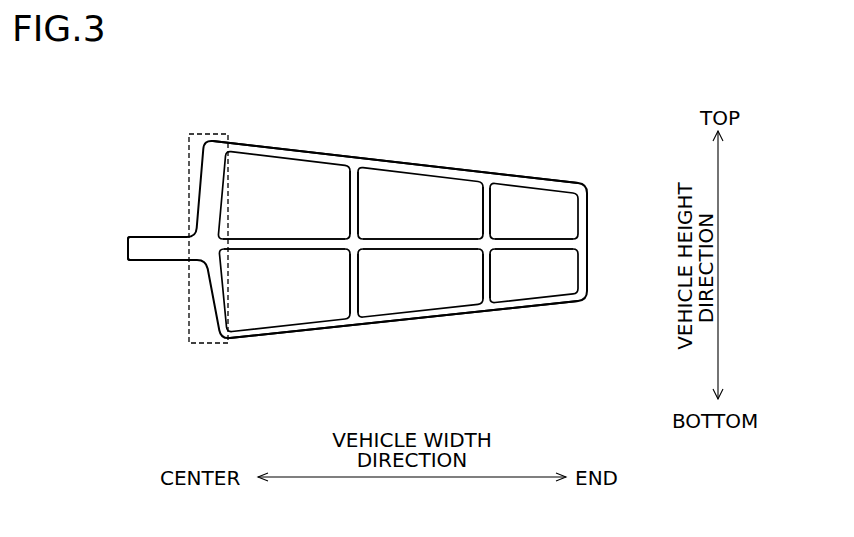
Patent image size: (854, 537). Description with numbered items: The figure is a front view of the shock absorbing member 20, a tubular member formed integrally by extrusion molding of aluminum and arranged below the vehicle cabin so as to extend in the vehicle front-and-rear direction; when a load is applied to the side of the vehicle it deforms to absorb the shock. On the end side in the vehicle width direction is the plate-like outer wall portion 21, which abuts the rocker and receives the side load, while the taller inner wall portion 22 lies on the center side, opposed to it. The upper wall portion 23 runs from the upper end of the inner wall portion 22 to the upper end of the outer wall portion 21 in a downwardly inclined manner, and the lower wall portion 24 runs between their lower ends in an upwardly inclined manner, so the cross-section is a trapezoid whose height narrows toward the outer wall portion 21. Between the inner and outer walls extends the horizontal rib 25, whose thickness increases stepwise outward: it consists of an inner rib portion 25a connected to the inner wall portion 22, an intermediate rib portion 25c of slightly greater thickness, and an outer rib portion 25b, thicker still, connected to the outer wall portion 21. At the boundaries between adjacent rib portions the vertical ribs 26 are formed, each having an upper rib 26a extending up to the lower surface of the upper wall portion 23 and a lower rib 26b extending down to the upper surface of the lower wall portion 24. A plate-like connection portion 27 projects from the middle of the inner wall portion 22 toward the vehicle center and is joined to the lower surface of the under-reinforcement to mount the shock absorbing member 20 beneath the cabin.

The shock absorbing member 20 is at (336, 136).
The outer wall portion 21 is at (588, 226).
The inner wall portion 22 is at (189, 324).
The upper wall portion 23 is at (457, 168).
The lower wall portion 24 is at (541, 305).
The horizontal rib 25 is at (398, 286).
The inner rib portion 25a is at (354, 297).
The outer rib portion 25b is at (506, 250).
The intermediate rib portion 25c is at (413, 248).
The vertical ribs 26 is at (398, 242).
The upper rib 26a is at (350, 188).
The lower rib 26b is at (346, 252).
The connection portion 27 is at (157, 237).